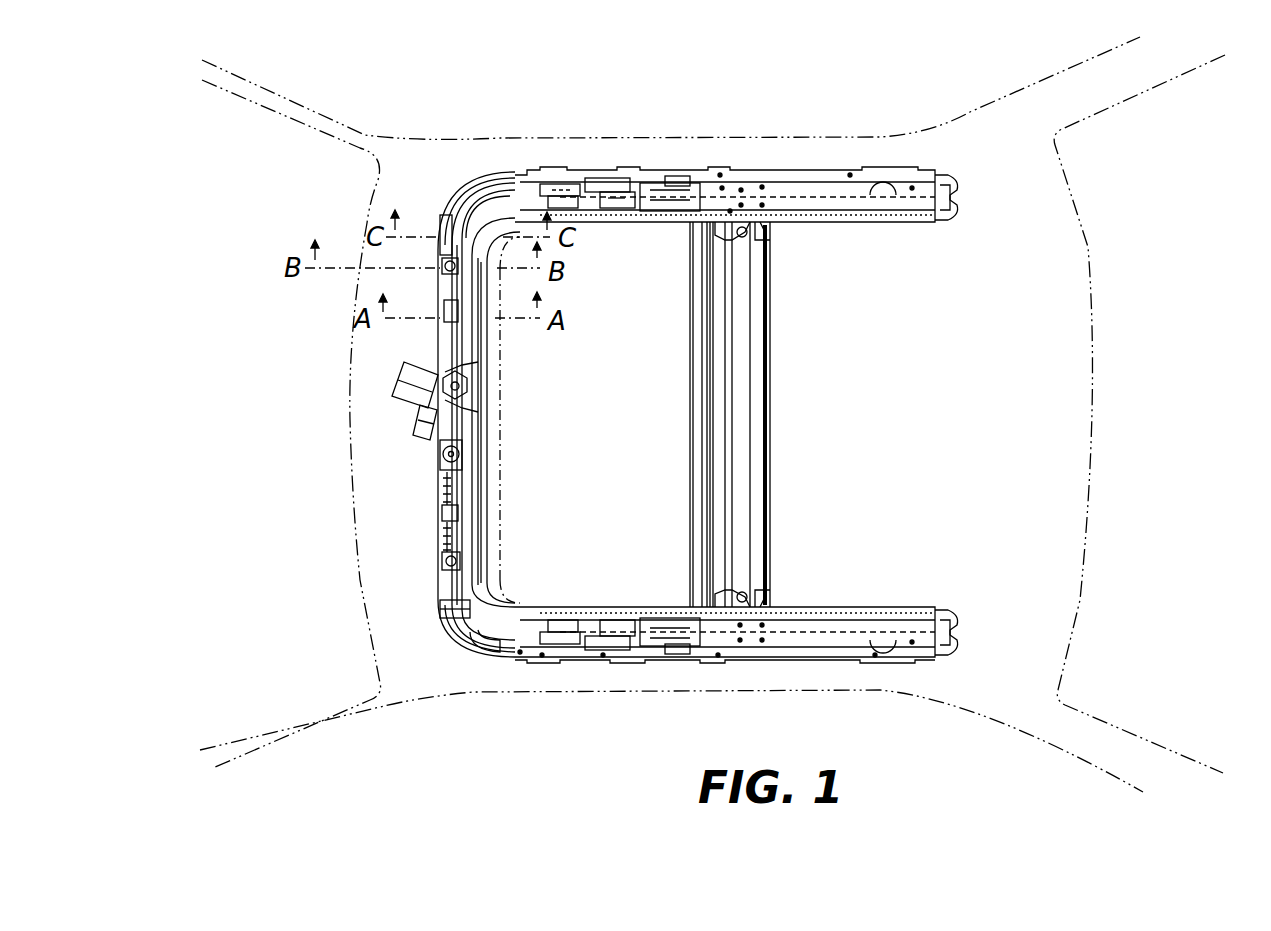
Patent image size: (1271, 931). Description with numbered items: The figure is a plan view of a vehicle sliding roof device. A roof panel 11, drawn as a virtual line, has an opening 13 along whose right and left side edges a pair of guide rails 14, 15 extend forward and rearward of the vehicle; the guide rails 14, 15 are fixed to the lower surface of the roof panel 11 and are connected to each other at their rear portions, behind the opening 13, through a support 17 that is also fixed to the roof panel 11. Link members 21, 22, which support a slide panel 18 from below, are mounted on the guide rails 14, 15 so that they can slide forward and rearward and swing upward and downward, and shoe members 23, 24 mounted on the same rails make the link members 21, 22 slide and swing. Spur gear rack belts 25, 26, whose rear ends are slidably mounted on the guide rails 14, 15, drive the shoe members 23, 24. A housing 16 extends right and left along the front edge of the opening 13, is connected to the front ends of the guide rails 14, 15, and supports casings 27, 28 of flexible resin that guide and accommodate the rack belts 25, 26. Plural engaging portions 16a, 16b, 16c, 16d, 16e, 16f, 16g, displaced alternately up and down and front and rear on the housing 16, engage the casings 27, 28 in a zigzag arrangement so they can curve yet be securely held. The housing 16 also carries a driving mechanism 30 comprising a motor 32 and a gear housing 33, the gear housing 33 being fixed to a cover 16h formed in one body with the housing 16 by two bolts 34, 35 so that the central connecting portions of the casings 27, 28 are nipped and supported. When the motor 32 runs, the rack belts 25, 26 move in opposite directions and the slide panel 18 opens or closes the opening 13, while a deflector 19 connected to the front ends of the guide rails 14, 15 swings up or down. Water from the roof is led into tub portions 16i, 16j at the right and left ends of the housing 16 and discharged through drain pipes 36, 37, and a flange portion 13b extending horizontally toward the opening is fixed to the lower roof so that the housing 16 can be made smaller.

The roof panel 11 is at (358, 553).
The opening 13 is at (690, 395).
The flange portion 13b is at (500, 497).
The guide rail 14 is at (666, 188).
The guide rail 15 is at (660, 642).
The housing 16 is at (455, 352).
The engaging portion 16a is at (452, 216).
The engaging portion 16b is at (442, 266).
The engaging portion 16c is at (450, 313).
The engaging portion 16d is at (442, 452).
The engaging portion 16e is at (447, 512).
The engaging portion 16f is at (447, 559).
The engaging portion 16g is at (445, 615).
The cover 16h is at (470, 381).
The tub portion 16i is at (466, 200).
The tub portion 16j is at (468, 630).
The support 17 is at (755, 326).
The slide panel 18 is at (670, 465).
The deflector 19 is at (481, 404).
The link member 21 is at (597, 205).
The link member 22 is at (592, 622).
The shoe member 23 is at (637, 205).
The shoe member 24 is at (632, 618).
The spur gear rack belt 25 is at (588, 180).
The spur gear rack belt 26 is at (583, 658).
The casing 27 is at (447, 492).
The casing 28 is at (447, 543).
The driving mechanism 30 is at (369, 404).
The motor 32 is at (380, 404).
The gear housing 33 is at (410, 397).
The bolt 34 is at (462, 368).
The bolt 35 is at (462, 418).
The drain pipe 36 is at (468, 178).
The drain pipe 37 is at (470, 655).